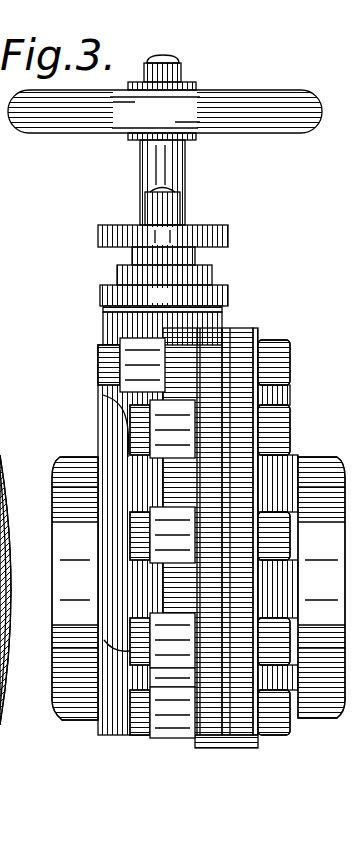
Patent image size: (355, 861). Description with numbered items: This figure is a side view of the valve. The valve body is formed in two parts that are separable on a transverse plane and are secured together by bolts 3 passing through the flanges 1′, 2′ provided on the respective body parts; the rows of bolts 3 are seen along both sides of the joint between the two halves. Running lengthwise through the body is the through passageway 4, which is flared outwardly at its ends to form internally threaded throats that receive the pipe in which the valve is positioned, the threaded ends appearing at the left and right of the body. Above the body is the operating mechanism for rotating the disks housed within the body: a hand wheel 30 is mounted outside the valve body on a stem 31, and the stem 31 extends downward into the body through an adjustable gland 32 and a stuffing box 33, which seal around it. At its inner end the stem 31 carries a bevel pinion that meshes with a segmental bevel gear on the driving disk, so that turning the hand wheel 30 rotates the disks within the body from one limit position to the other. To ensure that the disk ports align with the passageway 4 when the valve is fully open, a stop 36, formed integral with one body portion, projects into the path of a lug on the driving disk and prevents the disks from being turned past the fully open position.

The hand wheel 30 is at (272, 90).
The stem 31 is at (148, 140).
The adjustable gland 32 is at (98, 238).
The stuffing box 33 is at (100, 297).
The flange 1′ is at (211, 748).
The flange 2′ is at (237, 748).
The bolts 3 is at (290, 358).
The stop 36 is at (12, 688).
The through passageway 4 is at (5, 539).